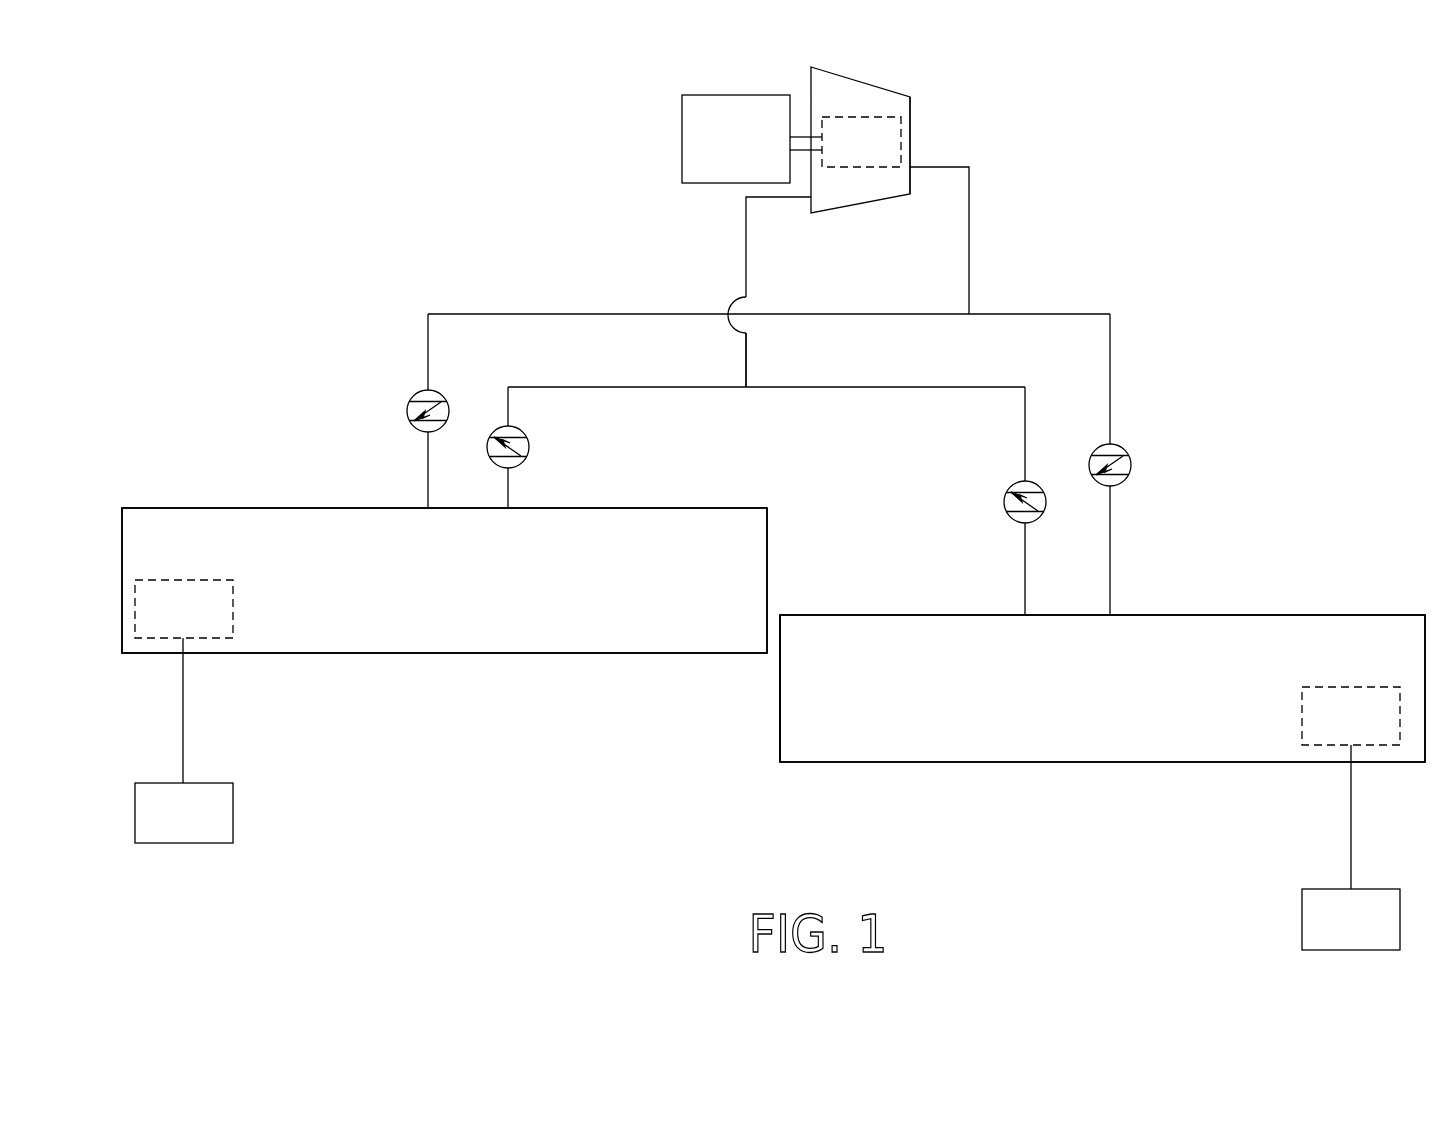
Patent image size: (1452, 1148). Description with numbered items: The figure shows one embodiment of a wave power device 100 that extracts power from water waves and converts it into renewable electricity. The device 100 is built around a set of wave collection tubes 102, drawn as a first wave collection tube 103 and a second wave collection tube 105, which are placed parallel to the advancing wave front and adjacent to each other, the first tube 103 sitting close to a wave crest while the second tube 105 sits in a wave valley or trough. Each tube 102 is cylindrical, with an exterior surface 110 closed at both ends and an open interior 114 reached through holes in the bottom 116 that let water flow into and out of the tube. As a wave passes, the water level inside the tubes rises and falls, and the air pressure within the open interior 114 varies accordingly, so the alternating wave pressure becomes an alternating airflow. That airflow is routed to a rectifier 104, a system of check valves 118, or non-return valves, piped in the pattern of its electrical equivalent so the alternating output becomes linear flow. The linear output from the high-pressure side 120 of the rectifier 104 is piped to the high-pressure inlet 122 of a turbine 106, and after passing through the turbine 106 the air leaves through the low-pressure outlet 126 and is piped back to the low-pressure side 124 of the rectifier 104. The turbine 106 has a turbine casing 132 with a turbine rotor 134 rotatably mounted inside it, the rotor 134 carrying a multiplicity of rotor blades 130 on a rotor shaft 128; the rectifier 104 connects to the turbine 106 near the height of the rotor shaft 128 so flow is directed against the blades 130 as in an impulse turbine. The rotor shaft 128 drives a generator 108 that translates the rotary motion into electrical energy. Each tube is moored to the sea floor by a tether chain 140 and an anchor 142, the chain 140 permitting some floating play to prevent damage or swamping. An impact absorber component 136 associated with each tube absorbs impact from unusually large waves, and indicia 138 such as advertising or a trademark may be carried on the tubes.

The wave power device 100 is at (1162, 136).
The wave collection tubes 102 is at (152, 551).
The first wave collection tube 103 is at (360, 547).
The rectifier 104 is at (784, 282).
The second wave collection tube 105 is at (1049, 685).
The turbine 106 is at (856, 80).
The generator 108 is at (682, 95).
The exterior surface 110 is at (714, 581).
The open interior 114 is at (780, 695).
The holes in the bottom 116 is at (780, 740).
The check valves 118 is at (530, 447).
The high-pressure side 120 is at (650, 314).
The high-pressure inlet 122 is at (570, 314).
The low-pressure side 124 is at (808, 386).
The low-pressure outlet 126 is at (758, 388).
The rotor shaft 128 is at (801, 133).
The rotor blades 130 is at (921, 184).
The turbine casing 132 is at (911, 97).
The turbine rotor 134 is at (876, 134).
The impact absorber component 136 is at (160, 617).
The indicia 138 is at (1032, 740).
The tether chain 140 is at (186, 722).
The anchor 142 is at (160, 820).